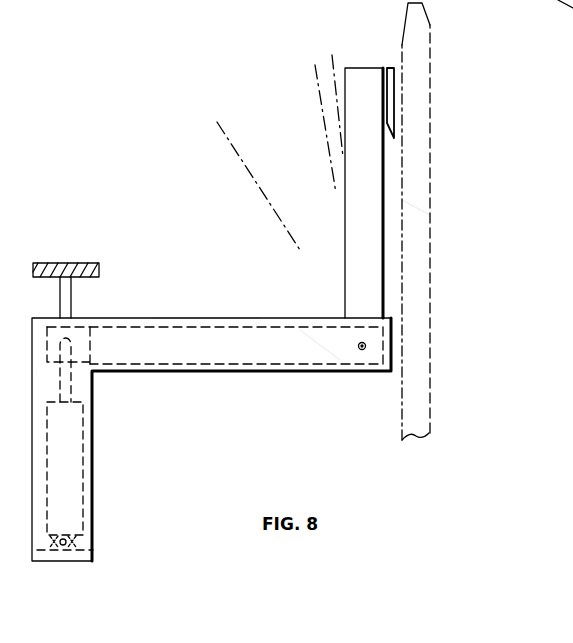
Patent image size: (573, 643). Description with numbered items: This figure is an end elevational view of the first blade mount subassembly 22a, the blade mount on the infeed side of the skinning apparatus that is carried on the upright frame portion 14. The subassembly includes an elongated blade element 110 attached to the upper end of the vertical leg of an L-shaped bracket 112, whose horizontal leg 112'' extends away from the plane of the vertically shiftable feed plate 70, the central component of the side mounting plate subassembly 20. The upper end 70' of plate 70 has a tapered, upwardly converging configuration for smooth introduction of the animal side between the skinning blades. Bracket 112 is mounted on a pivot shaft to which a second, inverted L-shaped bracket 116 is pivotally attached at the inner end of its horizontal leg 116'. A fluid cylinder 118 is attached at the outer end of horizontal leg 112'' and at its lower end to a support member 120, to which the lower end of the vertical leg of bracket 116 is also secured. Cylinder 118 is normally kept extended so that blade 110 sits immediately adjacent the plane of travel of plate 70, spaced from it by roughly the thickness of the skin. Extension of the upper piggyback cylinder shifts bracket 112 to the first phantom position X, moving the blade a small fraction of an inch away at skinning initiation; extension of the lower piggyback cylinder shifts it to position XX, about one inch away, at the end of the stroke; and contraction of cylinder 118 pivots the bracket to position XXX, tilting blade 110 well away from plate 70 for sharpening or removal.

The upright frame portion 14 is at (60, 256).
The side mounting plate subassembly 20 is at (430, 206).
The first blade mount subassembly 22a is at (154, 314).
The feed plate 70 is at (449, 232).
The upper end of plate 70' is at (445, 24).
The blade element 110 is at (390, 98).
The L-shaped bracket 112 is at (327, 193).
The horizontal leg of bracket 112'' is at (332, 379).
The inverted L-shaped bracket 116 is at (241, 466).
The horizontal leg of inverted L-shaped bracket 116' is at (205, 291).
The fluid cylinder 118 is at (68, 475).
The support member 120 is at (77, 561).
The first phantom line position X is at (333, 70).
The second phantom line position XX is at (316, 75).
The third phantom line position XXX is at (228, 137).